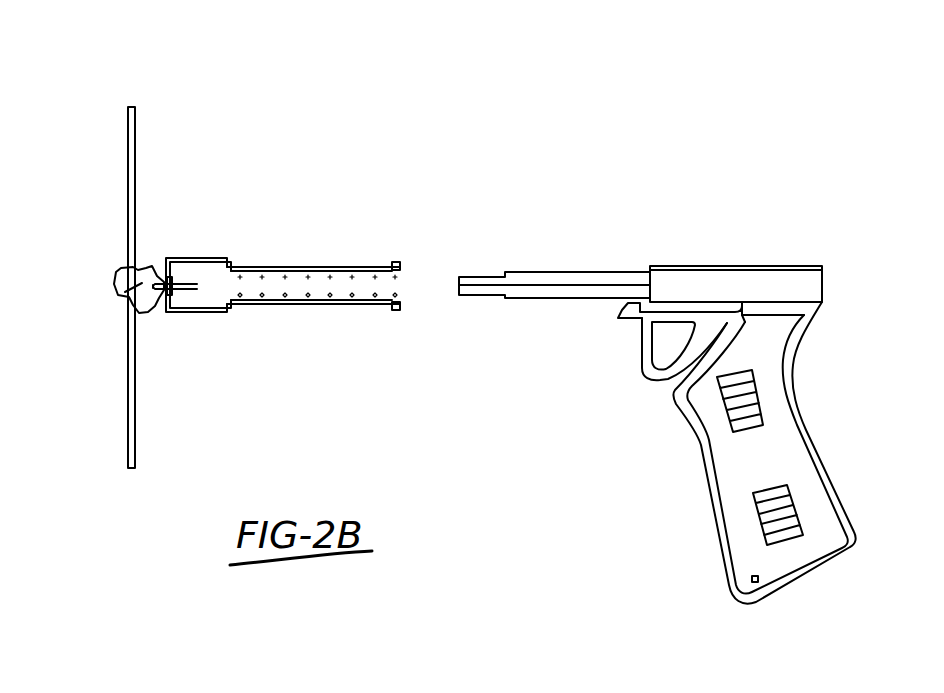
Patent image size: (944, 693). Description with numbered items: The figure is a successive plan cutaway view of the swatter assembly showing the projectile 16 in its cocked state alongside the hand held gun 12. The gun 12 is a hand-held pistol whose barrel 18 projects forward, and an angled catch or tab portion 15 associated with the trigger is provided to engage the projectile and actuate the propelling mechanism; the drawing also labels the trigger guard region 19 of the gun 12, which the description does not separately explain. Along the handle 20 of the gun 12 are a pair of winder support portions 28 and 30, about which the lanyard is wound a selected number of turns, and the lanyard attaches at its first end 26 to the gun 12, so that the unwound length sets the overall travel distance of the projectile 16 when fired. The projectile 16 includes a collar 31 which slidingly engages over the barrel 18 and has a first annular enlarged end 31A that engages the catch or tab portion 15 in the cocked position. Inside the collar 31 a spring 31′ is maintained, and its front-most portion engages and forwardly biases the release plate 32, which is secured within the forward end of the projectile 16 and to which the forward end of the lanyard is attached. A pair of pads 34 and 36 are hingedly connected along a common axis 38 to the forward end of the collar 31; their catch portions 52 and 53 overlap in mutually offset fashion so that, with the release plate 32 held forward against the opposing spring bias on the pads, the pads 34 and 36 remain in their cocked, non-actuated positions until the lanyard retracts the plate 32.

The hand held gun 12 is at (737, 278).
The angled catch or tab portion 15 is at (618, 309).
The projectile 16 is at (255, 116).
The barrel 18 is at (545, 270).
The trigger guard 19 is at (642, 346).
The handle 20 is at (728, 465).
The first end 26 is at (752, 581).
The winder support portion 28 is at (797, 508).
The winder support portion 30 is at (762, 397).
The collar 31 is at (280, 266).
The spring 31′ is at (393, 226).
The first annular enlarged end 31A is at (400, 312).
The release plate 32 is at (180, 272).
The pad 34 is at (122, 191).
The pad 36 is at (130, 377).
The common axis 38 is at (116, 294).
The catch portion 52 is at (160, 315).
The catch portion 53 is at (152, 262).